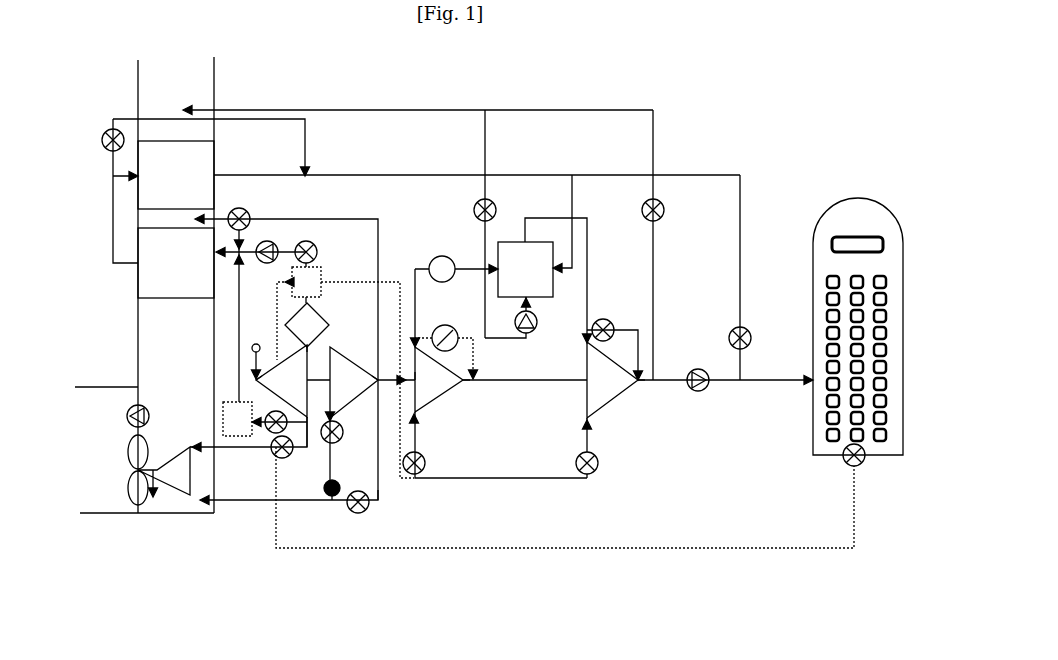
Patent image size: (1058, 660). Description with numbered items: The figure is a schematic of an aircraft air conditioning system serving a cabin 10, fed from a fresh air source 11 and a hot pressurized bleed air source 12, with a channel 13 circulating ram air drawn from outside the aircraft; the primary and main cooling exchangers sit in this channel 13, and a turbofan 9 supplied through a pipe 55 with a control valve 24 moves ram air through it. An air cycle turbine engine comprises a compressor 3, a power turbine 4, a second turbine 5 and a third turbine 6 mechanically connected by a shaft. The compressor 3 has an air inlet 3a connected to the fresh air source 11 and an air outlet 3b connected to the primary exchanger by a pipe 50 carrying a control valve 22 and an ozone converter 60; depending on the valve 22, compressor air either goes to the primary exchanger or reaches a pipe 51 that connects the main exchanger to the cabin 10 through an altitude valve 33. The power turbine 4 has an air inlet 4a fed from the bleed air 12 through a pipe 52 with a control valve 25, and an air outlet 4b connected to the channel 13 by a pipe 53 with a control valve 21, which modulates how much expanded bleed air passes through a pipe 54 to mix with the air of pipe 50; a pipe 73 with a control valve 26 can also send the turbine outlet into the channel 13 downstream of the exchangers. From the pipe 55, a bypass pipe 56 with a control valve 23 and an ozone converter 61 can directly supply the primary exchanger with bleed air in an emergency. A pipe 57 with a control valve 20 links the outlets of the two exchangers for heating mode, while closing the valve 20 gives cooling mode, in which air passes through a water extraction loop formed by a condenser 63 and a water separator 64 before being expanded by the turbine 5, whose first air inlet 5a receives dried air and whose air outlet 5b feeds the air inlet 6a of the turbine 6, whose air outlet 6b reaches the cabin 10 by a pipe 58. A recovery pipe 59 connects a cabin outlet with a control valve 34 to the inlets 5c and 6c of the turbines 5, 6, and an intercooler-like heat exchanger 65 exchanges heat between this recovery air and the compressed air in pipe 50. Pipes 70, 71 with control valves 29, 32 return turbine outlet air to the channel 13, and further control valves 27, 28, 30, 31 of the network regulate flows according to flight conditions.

The channel 13 is at (137, 86).
The control valve 20 is at (104, 133).
The pipe 57 is at (113, 153).
The control valve 21 is at (250, 214).
The pipe 54 is at (242, 231).
The control valve 22 is at (316, 249).
The pipe 50 is at (316, 300).
The intercooler-like heat exchanger 65 is at (306, 283).
The ozone converter 60 is at (307, 325).
The fresh air source 11 is at (257, 343).
The compressor 3 is at (293, 381).
The air inlet 3a is at (254, 380).
The air outlet 3b is at (310, 344).
The power turbine 4 is at (372, 382).
The air inlet 4a is at (334, 418).
The air outlet 4b is at (376, 374).
The second turbine 5 is at (499, 340).
The first air inlet 5a is at (402, 363).
The air outlet 5b is at (460, 383).
The inlet 5c is at (499, 444).
The third turbine 6 is at (700, 380).
The air inlet 6a is at (584, 344).
The air outlet 6b is at (637, 384).
The inlet 6c is at (590, 420).
The turbofan 9 is at (170, 455).
The ozone converter 61 is at (237, 419).
The control valve 23 is at (272, 419).
The pipe 56 is at (317, 423).
The control valve 24 is at (273, 452).
The pipe 55 is at (315, 474).
The control valve 25 is at (343, 433).
The pipe 52 is at (340, 460).
The bleed air 12 is at (319, 482).
The control valve 26 is at (352, 510).
The pipe 73 is at (380, 492).
The control valve 27 is at (425, 464).
The control valve 28 is at (445, 325).
The control valve 29 is at (496, 208).
The water separator 64 is at (456, 269).
The condenser 63 is at (542, 280).
The control valve 30 is at (606, 320).
The control valve 31 is at (599, 466).
The control valve 32 is at (664, 212).
The altitude valve 33 is at (751, 340).
The pipe 58 is at (722, 390).
The cabin 10 is at (905, 313).
The control valve 34 is at (865, 465).
The pipe 59 is at (595, 548).
The pipe 51 is at (418, 174).
The pipe 53 is at (380, 242).
The pipe 70 is at (486, 160).
The pipe 71 is at (654, 158).